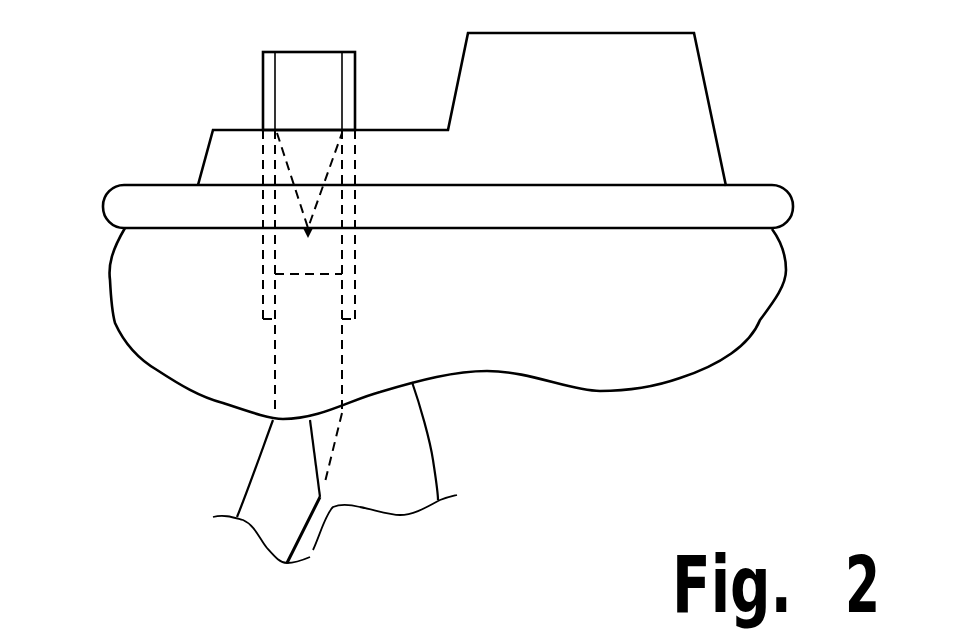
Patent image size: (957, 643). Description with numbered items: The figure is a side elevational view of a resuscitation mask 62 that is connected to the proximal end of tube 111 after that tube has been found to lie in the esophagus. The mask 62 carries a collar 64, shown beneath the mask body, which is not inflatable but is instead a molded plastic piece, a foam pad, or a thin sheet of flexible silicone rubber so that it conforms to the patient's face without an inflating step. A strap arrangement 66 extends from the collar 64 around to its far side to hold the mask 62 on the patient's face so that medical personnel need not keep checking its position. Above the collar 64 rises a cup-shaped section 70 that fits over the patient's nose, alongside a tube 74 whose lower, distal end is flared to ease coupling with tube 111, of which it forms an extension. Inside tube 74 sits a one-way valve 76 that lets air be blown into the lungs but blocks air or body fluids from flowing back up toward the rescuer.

The mask 62 is at (812, 205).
The collar 64 is at (747, 325).
The strap arrangement 66 is at (408, 497).
The cup-shaped section 70 is at (692, 83).
The tube 74 is at (263, 97).
The one-way valve 76 is at (290, 172).
The tube 111 is at (255, 480).